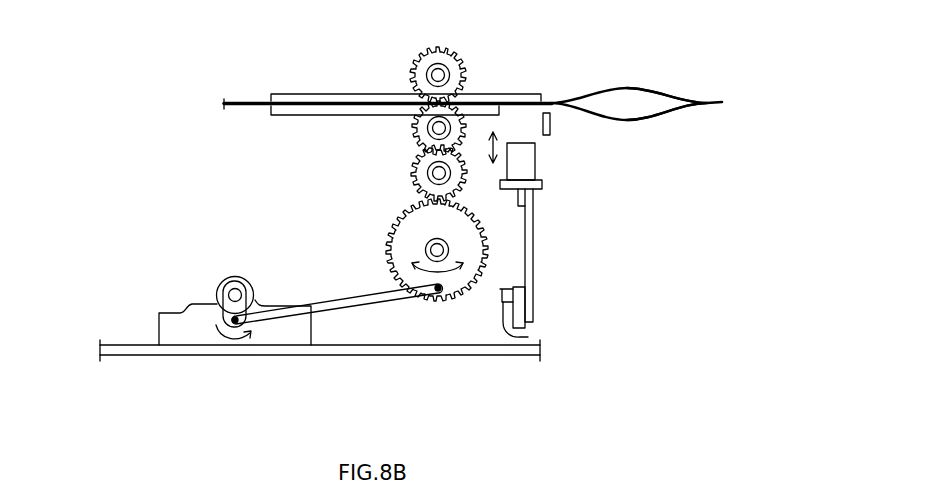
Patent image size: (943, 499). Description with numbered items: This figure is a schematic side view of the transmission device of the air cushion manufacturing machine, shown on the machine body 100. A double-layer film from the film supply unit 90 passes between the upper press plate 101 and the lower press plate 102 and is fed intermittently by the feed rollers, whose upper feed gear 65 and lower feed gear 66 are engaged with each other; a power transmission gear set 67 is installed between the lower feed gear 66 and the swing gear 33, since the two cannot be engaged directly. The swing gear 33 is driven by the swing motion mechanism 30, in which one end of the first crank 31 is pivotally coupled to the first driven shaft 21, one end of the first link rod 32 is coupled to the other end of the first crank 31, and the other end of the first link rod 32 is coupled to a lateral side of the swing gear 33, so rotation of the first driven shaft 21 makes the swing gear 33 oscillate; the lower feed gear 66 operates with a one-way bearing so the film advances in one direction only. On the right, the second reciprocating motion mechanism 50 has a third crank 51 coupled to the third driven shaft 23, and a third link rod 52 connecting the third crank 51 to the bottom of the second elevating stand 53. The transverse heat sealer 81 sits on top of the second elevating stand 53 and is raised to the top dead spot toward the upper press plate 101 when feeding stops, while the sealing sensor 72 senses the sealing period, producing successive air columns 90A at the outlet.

The first driven shaft 21 is at (215, 277).
The third driven shaft 23 is at (528, 337).
The swing motion mechanism 30 is at (347, 222).
The first crank 31 is at (262, 305).
The first link rod 32 is at (318, 310).
The swing gear 33 is at (395, 267).
The second reciprocating motion mechanism 50 is at (607, 190).
The third crank 51 is at (520, 310).
The third link rod 52 is at (528, 242).
The second elevating stand 53 is at (522, 185).
The upper feed gear 65 is at (425, 73).
The lower feed gear 66 is at (420, 125).
The power transmission gear set 67 is at (418, 148).
The sealing sensor 72 is at (551, 124).
The transverse heat sealer 81 is at (528, 163).
The film supply unit 90 is at (243, 106).
The air columns 90A is at (673, 85).
The machine body 100 is at (137, 346).
The upper press plate 101 is at (318, 97).
The lower press plate 102 is at (318, 113).